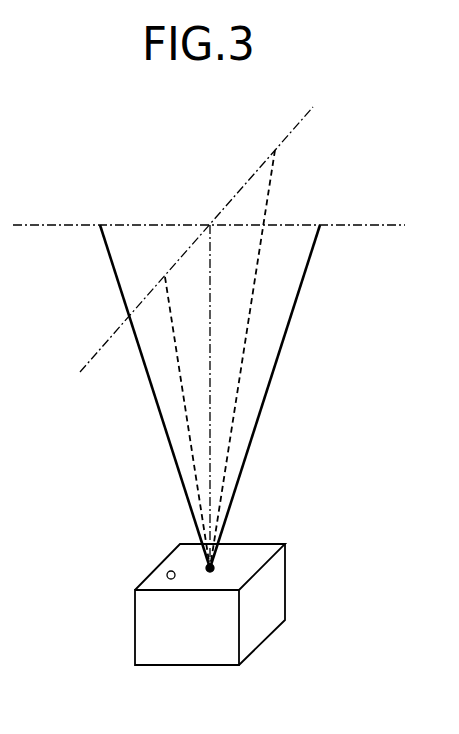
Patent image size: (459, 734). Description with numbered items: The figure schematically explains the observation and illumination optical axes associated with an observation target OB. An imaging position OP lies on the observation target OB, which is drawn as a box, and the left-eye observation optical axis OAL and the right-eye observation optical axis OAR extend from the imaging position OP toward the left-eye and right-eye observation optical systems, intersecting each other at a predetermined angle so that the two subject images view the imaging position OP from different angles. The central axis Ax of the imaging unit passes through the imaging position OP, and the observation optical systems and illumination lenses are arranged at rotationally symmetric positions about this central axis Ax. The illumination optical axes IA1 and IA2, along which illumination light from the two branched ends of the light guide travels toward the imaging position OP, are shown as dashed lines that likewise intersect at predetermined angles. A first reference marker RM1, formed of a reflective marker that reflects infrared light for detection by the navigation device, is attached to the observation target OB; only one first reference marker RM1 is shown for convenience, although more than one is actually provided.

The central axis Ax is at (210, 281).
The illumination optical axis IA1 is at (247, 342).
The illumination optical axis IA2 is at (183, 410).
The right-eye observation optical axis OAR is at (170, 452).
The left-eye observation optical axis OAL is at (248, 452).
The observation target OB is at (262, 615).
The imaging position OP is at (215, 567).
The first reference marker RM1 is at (166, 574).